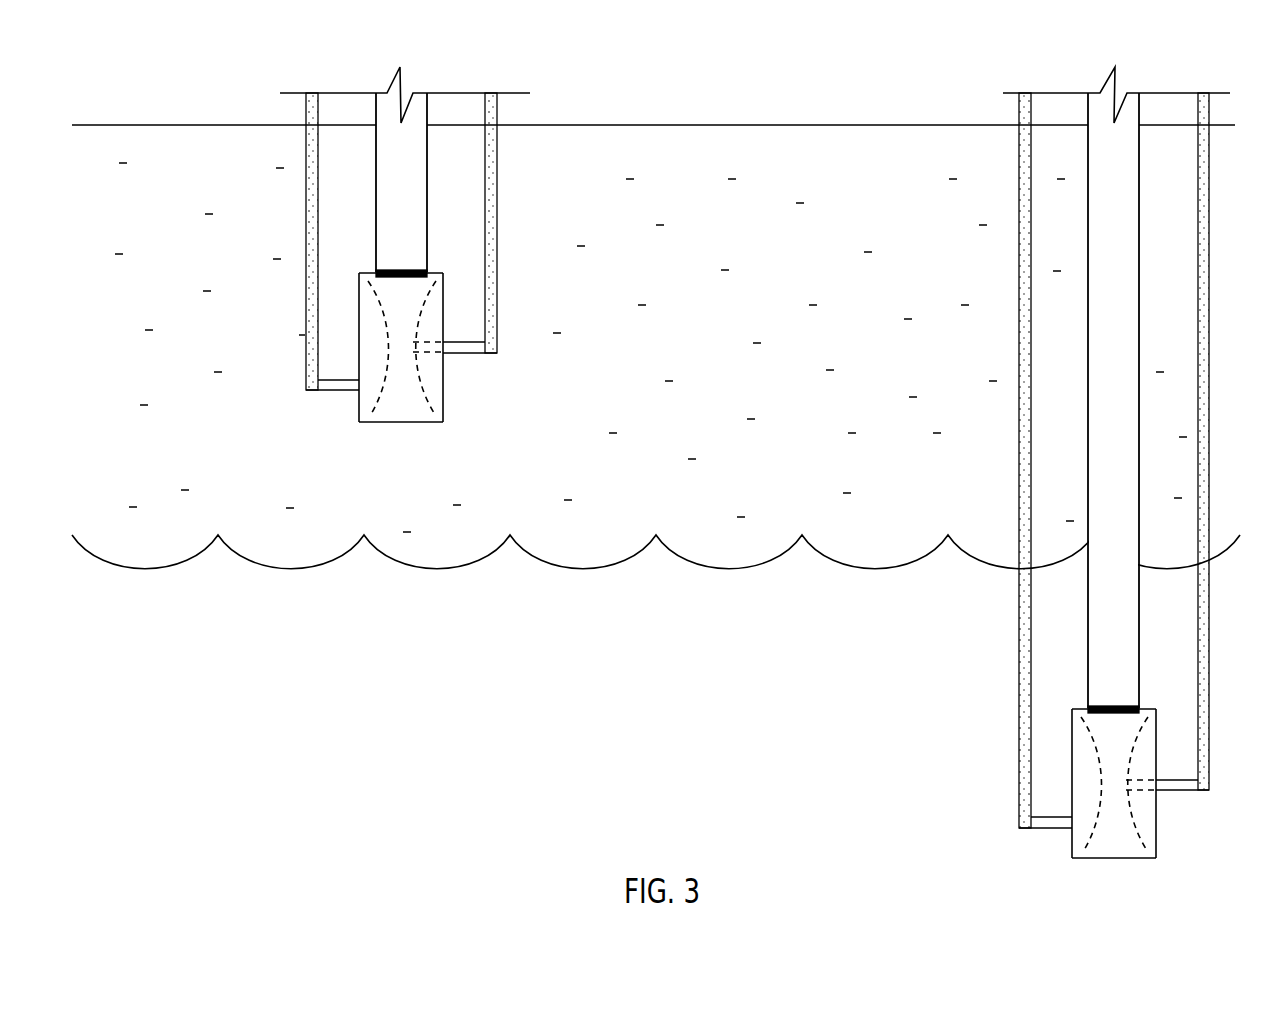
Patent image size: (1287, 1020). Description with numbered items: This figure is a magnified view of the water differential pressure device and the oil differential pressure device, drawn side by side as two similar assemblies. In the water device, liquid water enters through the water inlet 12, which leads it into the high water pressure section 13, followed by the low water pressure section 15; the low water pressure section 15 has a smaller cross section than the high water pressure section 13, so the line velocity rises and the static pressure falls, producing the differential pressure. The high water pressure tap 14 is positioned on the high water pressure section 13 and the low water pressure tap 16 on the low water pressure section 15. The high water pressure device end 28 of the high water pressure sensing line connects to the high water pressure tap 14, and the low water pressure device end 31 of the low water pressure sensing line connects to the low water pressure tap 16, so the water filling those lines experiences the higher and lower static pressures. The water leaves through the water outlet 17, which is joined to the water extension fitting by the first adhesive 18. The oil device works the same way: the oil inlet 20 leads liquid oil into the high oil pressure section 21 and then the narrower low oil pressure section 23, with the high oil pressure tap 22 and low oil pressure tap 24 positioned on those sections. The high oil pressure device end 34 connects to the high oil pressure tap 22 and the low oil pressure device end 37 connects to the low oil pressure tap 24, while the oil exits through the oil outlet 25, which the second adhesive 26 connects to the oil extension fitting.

The water inlet 12 is at (1115, 859).
The high water pressure section 13 is at (1162, 823).
The high water pressure tap 14 is at (1073, 843).
The low water pressure section 15 is at (1062, 785).
The low water pressure tap 16 is at (1143, 783).
The water outlet 17 is at (1136, 718).
The first adhesive 18 is at (1115, 708).
The high water pressure device end 28 is at (1028, 832).
The low water pressure device end 31 is at (1180, 792).
The oil inlet 20 is at (402, 423).
The high oil pressure section 21 is at (450, 385).
The high oil pressure tap 22 is at (360, 405).
The low oil pressure section 23 is at (350, 349).
The low oil pressure tap 24 is at (433, 353).
The oil outlet 25 is at (425, 282).
The second adhesive 26 is at (400, 271).
The high oil pressure device end 34 is at (318, 392).
The low oil pressure device end 37 is at (475, 352).